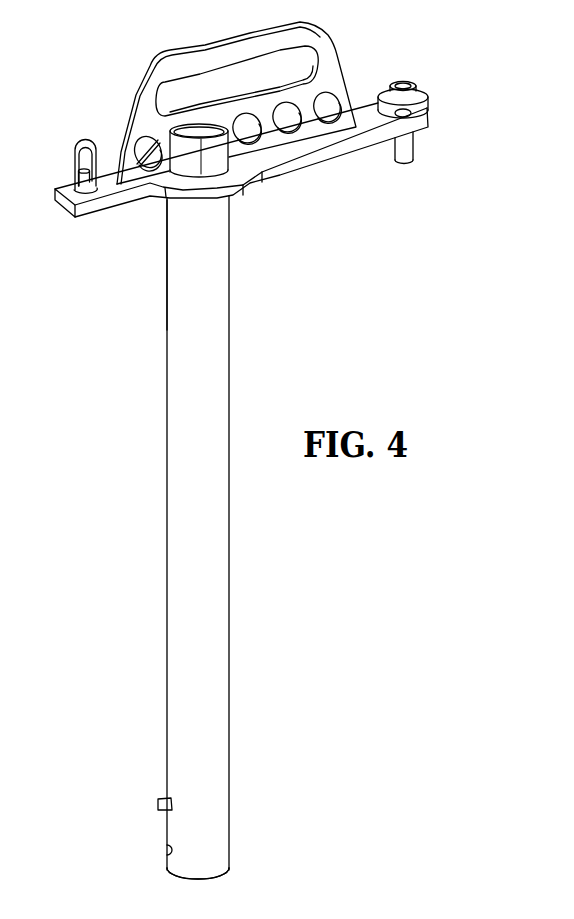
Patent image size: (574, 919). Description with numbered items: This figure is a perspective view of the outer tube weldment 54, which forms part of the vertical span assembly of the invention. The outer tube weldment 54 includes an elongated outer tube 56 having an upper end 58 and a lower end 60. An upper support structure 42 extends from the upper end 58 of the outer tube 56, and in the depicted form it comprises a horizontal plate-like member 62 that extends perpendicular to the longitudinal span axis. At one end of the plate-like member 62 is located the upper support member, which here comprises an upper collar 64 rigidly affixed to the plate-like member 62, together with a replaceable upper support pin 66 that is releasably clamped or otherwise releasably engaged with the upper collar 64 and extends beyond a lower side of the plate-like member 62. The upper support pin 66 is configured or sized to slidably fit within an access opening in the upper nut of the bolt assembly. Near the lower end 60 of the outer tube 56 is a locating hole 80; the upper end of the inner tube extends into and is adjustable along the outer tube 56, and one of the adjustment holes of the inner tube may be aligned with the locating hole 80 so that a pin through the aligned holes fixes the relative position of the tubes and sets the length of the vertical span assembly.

The upper support structure 42 is at (178, 54).
The outer tube weldment 54 is at (108, 127).
The outer tube 56 is at (172, 488).
The upper end 58 is at (173, 240).
The lower end 60 is at (213, 822).
The plate-like member 62 is at (365, 108).
The upper collar 64 is at (426, 106).
The upper support pin 66 is at (413, 150).
The locating hole 80 is at (165, 850).